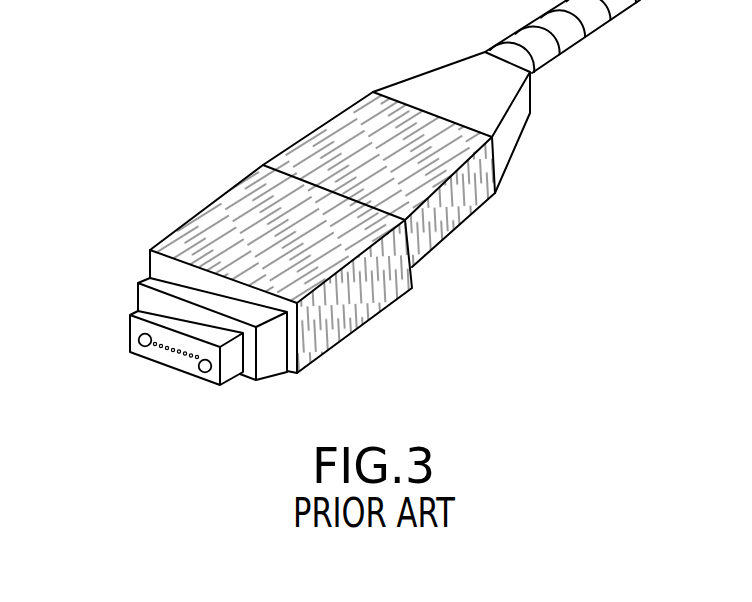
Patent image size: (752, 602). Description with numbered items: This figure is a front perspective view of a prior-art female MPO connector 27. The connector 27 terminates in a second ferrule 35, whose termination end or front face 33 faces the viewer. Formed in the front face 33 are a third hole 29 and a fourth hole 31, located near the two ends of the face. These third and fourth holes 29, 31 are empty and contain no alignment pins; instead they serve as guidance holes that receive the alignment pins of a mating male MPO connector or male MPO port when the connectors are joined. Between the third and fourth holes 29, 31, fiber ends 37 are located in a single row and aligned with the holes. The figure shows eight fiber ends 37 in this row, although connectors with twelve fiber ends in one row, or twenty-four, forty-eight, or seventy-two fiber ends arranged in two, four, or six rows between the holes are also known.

The female MPO connector 27 is at (212, 120).
The third hole 29 is at (140, 334).
The fourth hole 31 is at (213, 373).
The front face 33 is at (172, 338).
The second ferrule 35 is at (230, 358).
The fiber ends 37 is at (173, 349).